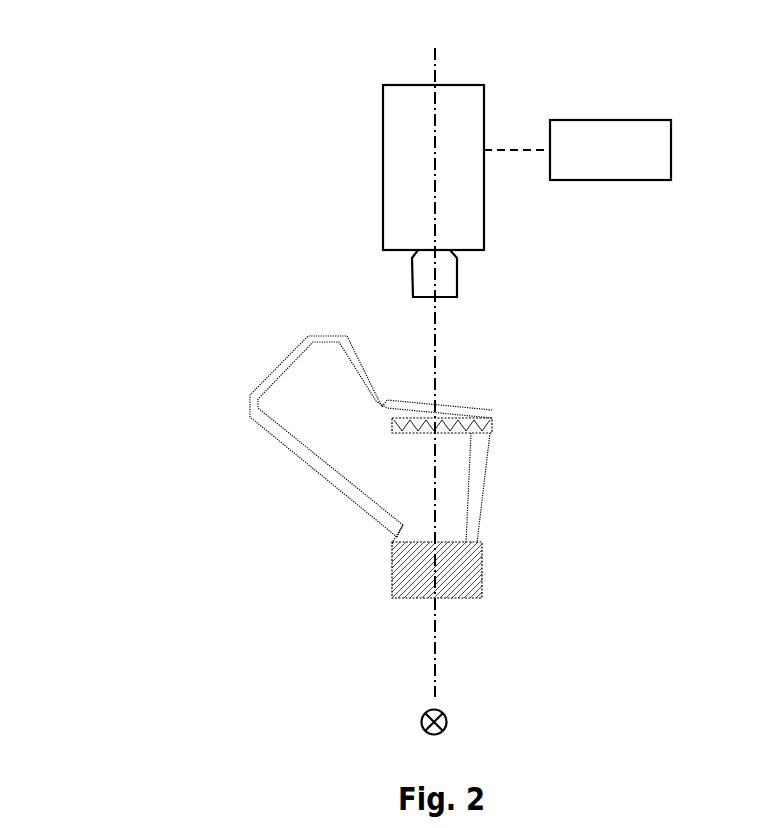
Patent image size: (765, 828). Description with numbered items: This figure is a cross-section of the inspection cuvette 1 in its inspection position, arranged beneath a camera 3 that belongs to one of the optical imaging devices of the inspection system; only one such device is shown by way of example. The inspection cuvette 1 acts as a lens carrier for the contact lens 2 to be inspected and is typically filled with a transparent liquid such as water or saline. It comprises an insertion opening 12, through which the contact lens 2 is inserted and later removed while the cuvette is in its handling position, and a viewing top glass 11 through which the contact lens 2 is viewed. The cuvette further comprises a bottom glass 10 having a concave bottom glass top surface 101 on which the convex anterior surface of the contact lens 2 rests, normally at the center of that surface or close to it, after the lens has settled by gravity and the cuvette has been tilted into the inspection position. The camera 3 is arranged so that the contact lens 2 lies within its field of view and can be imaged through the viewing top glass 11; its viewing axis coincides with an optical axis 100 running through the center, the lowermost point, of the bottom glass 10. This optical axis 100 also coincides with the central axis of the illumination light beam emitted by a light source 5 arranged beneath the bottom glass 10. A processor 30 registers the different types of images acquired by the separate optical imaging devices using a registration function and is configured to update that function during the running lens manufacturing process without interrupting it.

The inspection cuvette 1 is at (352, 451).
The contact lens 2 is at (442, 546).
The camera 3 is at (383, 167).
The light source 5 is at (420, 721).
The bottom glass 10 is at (425, 570).
The viewing top glass 11 is at (452, 423).
The insertion opening 12 is at (293, 400).
The processor 30 is at (618, 120).
The optical axis 100 is at (437, 618).
The concave bottom glass top surface 101 is at (415, 542).